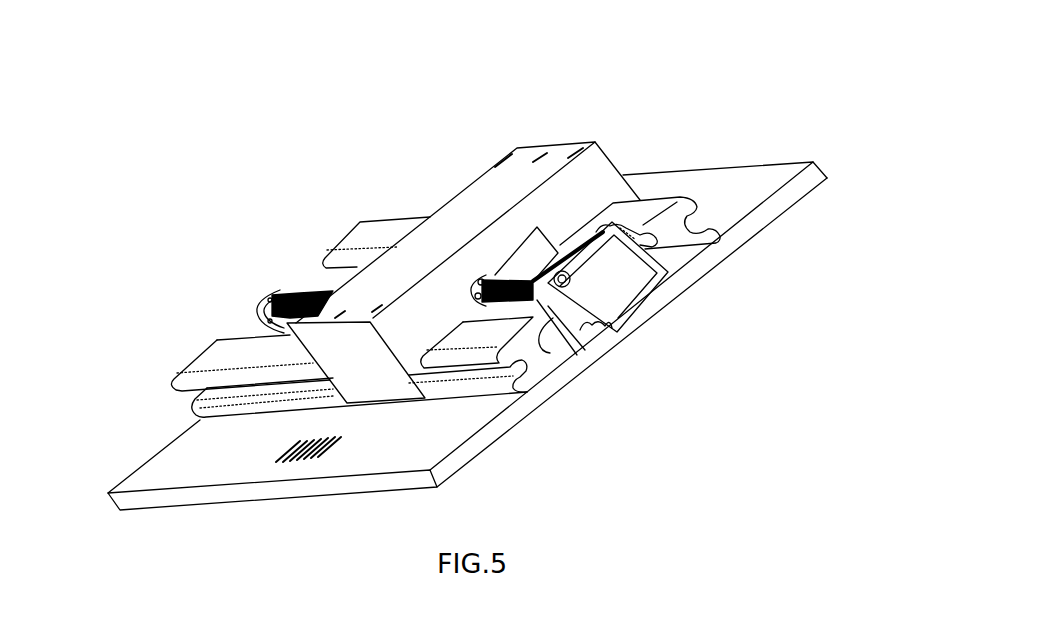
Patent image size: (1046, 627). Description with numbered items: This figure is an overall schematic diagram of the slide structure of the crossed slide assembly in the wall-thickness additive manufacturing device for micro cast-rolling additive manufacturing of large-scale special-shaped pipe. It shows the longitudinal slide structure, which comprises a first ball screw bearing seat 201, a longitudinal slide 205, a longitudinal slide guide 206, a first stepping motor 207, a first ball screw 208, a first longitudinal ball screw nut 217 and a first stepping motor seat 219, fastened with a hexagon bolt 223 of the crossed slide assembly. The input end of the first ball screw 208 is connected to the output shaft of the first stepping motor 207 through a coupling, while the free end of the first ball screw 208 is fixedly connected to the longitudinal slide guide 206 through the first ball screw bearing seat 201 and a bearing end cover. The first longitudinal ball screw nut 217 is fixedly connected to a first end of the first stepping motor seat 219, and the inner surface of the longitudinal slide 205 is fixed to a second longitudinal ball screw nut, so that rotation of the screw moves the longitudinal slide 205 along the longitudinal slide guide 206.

The first ball screw bearing seat 201 is at (272, 282).
The longitudinal slide 205 is at (592, 185).
The longitudinal slide guide 206 is at (733, 193).
The first stepping motor 207 is at (633, 287).
The first ball screw 208 is at (302, 296).
The first longitudinal ball screw nut 217 is at (572, 327).
The first stepping motor seat 219 is at (645, 237).
The hexagon bolt 223 is at (483, 278).